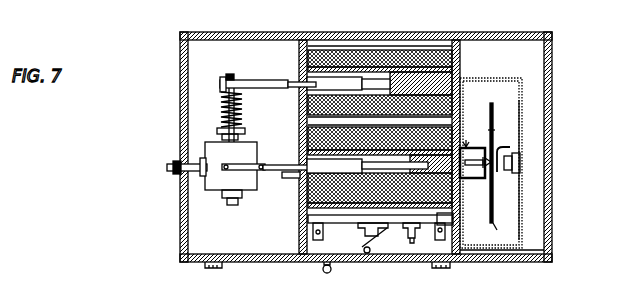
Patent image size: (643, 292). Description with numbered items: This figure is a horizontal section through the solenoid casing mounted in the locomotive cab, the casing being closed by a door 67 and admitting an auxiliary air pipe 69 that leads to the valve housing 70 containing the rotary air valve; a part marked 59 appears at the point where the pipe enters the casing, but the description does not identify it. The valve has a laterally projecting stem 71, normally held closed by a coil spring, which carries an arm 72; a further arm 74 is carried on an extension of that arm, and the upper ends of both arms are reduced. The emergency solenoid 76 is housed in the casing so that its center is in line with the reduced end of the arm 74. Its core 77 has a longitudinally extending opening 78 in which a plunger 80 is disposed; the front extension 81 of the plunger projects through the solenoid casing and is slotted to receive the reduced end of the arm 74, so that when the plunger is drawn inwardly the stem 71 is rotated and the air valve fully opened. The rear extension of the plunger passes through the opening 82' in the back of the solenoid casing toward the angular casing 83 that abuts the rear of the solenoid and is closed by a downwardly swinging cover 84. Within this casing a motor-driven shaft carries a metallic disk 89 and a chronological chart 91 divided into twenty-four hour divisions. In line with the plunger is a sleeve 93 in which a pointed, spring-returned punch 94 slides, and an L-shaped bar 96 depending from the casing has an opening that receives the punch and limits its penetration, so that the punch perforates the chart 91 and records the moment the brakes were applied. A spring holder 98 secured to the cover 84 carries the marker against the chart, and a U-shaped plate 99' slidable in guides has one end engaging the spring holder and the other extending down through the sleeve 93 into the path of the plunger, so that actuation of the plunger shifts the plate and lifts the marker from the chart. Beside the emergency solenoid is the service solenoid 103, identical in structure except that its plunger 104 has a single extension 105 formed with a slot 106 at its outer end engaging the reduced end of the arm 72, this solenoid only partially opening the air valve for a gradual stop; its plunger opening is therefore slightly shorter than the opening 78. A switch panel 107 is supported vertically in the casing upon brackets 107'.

The door 67 is at (552, 93).
The auxiliary air pipe 69 is at (188, 88).
The shaft flange 59 is at (173, 162).
The valve housing 70 is at (208, 177).
The stem 71 is at (222, 100).
The arm 72 is at (224, 82).
The arm 74 is at (237, 171).
The solenoid 76 is at (300, 205).
The core 77 is at (318, 240).
The opening 78 is at (358, 238).
The plunger 80 is at (295, 178).
The extension 81 is at (285, 158).
The opening 82' is at (475, 189).
The angular casing 83 is at (515, 79).
The downwardly swinging cover 84 is at (522, 218).
The metallic disk 89 is at (490, 133).
The chronological chart 91 is at (493, 195).
The sleeve 93 is at (466, 140).
The punch 94 is at (480, 148).
The L-shaped bar 96 is at (507, 148).
The spring holder 98 is at (517, 175).
The U-shaped plate 99' is at (523, 242).
The second solenoid 103 is at (388, 50).
The plunger 104 is at (343, 80).
The extension 105 is at (293, 82).
The slot 106 is at (252, 83).
The switch panel 107 is at (380, 252).
The brackets 107' is at (446, 257).